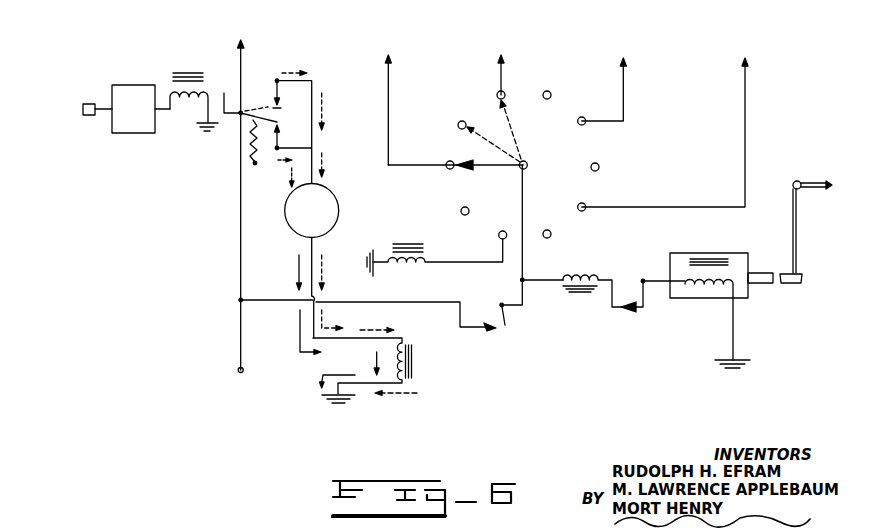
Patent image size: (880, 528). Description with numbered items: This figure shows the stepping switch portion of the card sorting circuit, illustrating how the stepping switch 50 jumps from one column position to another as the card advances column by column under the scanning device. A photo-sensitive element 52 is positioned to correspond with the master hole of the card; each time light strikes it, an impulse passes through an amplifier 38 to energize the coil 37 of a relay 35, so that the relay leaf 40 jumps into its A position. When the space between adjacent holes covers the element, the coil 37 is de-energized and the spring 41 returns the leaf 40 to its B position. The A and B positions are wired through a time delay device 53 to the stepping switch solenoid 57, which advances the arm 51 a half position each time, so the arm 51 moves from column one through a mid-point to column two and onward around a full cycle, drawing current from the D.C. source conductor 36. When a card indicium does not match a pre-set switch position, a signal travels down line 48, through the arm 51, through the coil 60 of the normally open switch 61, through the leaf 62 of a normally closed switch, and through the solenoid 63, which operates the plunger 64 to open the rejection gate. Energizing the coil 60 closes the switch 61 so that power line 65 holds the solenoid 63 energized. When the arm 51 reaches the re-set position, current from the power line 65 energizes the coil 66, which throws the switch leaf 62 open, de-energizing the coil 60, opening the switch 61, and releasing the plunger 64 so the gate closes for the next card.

The relay 35 is at (213, 60).
The D.C. supply conductor 36 is at (240, 208).
The coil 37 is at (183, 70).
The amplifier 38 is at (127, 97).
The relay leaf 40 is at (267, 110).
The spring 41 is at (243, 151).
The line 48 is at (388, 90).
The stepping switch 50 is at (606, 157).
The arm 51 is at (470, 133).
The photo-sensitive element 52 is at (89, 104).
The time delay device 53 is at (328, 202).
The stepping switch solenoid 57 is at (418, 366).
The coil 60 is at (590, 275).
The normally open switch 61 is at (493, 333).
The leaf of normally closed switch 62 is at (625, 310).
The solenoid 63 is at (707, 258).
The plunger 64 is at (768, 275).
The power line 65 is at (397, 305).
The coil 66 is at (413, 243).